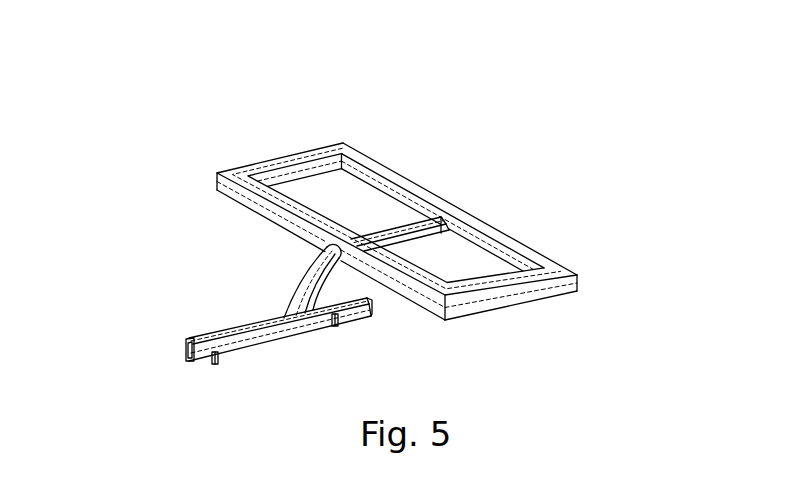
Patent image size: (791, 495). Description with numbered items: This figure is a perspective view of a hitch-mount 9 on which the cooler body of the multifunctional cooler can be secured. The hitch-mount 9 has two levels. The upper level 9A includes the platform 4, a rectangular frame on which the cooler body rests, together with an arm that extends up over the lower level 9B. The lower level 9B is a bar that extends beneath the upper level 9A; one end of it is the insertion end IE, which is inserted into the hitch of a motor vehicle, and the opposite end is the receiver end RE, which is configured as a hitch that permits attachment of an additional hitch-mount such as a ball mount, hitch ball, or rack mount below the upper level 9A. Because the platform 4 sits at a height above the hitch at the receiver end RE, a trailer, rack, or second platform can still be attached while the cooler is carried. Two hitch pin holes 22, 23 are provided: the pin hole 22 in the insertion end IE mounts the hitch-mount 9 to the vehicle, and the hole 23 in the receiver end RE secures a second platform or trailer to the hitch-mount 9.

The hitch-mount 9 is at (416, 140).
The upper level 9A is at (240, 167).
The lower level 9B is at (240, 327).
The platform 4 is at (525, 248).
The insertion end IE is at (186, 352).
The receiver end RE is at (370, 308).
The hitch pin hole 22 is at (216, 364).
The hitch pin hole 23 is at (337, 320).